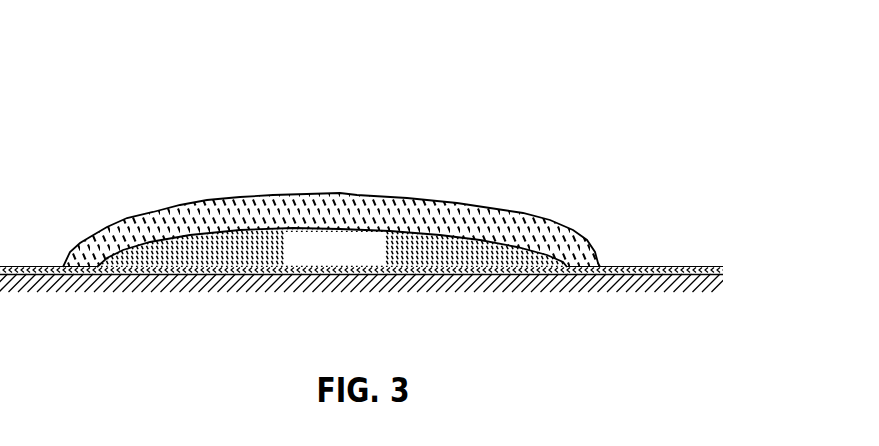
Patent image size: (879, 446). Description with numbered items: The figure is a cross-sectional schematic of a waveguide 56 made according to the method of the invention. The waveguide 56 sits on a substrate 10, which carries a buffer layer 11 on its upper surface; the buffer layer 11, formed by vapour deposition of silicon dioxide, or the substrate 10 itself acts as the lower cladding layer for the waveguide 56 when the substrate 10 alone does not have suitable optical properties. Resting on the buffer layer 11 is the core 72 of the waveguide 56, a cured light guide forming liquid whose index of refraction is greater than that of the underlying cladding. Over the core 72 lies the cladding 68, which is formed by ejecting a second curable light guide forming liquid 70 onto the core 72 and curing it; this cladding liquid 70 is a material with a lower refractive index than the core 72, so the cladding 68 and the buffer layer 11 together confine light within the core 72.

The substrate 10 is at (708, 290).
The buffer layer 11 is at (707, 265).
The waveguide 56 is at (331, 163).
The cladding 68 is at (246, 202).
The second curable light guide forming liquid 70 is at (173, 207).
The core 72 is at (465, 245).